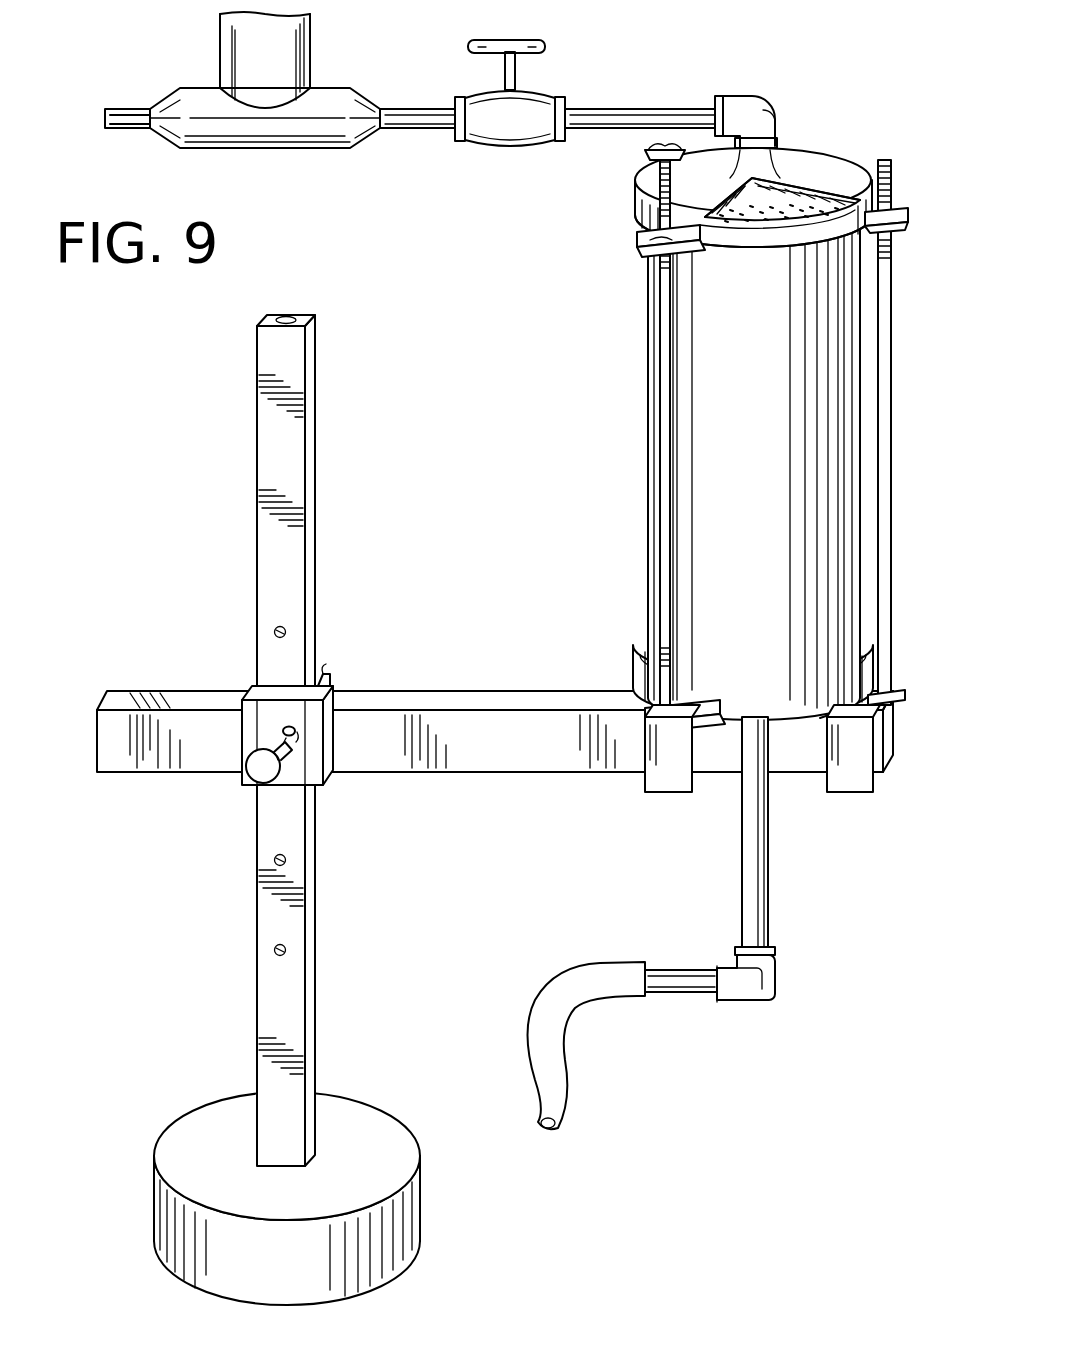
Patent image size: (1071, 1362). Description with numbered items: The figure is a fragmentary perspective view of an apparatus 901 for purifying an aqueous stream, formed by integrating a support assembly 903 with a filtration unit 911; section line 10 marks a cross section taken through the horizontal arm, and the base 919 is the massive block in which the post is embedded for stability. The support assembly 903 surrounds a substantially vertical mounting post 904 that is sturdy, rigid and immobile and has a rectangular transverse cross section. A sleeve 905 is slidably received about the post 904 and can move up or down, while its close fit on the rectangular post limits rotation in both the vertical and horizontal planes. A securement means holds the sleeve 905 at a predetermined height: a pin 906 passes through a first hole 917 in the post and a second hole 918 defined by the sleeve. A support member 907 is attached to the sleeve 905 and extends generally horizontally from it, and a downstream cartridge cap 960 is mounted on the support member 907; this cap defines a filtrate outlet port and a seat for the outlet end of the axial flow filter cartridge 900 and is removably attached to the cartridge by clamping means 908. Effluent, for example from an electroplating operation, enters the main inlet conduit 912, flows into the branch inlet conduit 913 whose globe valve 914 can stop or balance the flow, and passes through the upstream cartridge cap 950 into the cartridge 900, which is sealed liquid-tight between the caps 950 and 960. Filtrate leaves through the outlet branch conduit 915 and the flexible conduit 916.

The section line 10- 10 is at (67, 748).
The axial flow filter cartridge 900 is at (707, 434).
The apparatus 901 is at (692, 70).
The support assembly 903 is at (238, 740).
The mounting post 904 is at (262, 540).
The sleeve 905 is at (242, 712).
The pin 906 is at (248, 770).
The support member 907 is at (440, 772).
The clamping means 908 is at (662, 372).
The filtration unit 911 is at (704, 474).
The main inlet conduit 912 is at (312, 68).
The branch inlet conduit 913 is at (400, 128).
The globe valve 914 is at (513, 142).
The outlet branch conduit 915 is at (743, 887).
The flexible conduit 916 is at (570, 1062).
The first hole 917 is at (290, 762).
The second hole 918 is at (323, 718).
The base 919 is at (420, 1185).
The upstream cartridge cap 950 is at (636, 205).
The downstream cartridge cap 960 is at (633, 668).